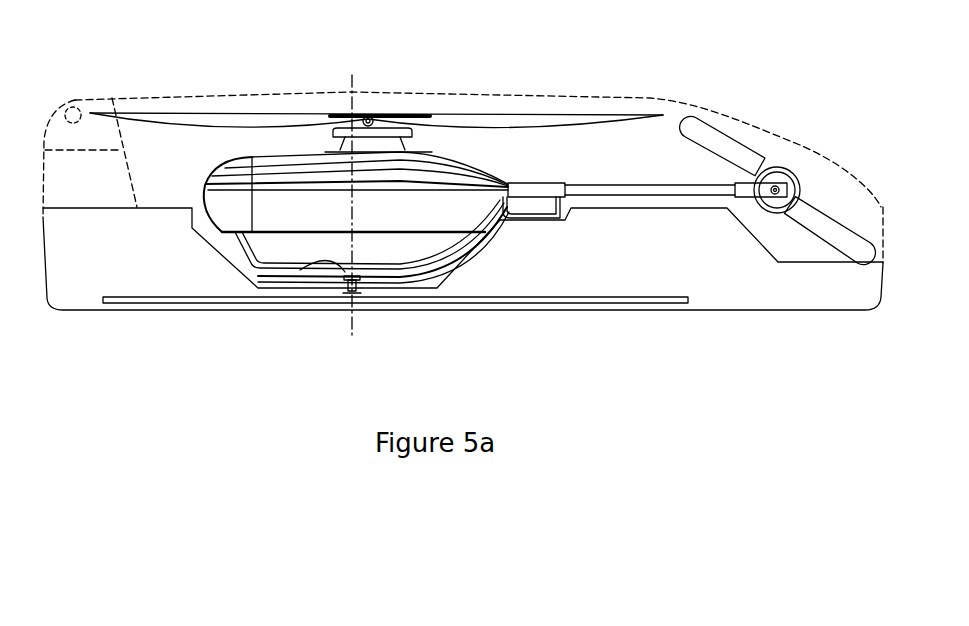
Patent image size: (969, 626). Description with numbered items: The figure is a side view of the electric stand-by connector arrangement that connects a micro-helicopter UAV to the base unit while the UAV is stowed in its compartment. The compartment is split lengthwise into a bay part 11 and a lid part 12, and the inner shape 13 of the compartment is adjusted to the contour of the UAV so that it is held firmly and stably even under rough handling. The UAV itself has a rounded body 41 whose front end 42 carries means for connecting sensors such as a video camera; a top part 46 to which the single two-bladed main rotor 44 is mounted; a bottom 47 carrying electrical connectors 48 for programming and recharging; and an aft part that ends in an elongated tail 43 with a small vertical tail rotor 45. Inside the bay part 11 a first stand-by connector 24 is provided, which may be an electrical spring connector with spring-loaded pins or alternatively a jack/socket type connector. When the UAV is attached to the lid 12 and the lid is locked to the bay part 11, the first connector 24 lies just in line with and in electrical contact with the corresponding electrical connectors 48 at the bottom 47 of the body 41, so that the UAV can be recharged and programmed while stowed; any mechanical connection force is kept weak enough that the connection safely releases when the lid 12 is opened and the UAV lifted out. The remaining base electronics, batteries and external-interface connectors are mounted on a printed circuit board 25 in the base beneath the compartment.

The bay part 11 is at (717, 275).
The lid part 12 is at (493, 92).
The inner shape 13 is at (463, 270).
The first stand-by connector 24 is at (345, 287).
The printed circuit board 25 is at (620, 303).
The body 41 is at (288, 200).
The front end 42 is at (223, 210).
The tail 43 is at (643, 190).
The main rotor 44 is at (333, 110).
The tail rotor 45 is at (733, 153).
The top part 46 is at (385, 143).
The bottom 47 is at (393, 277).
The electrical connectors 48 is at (328, 264).